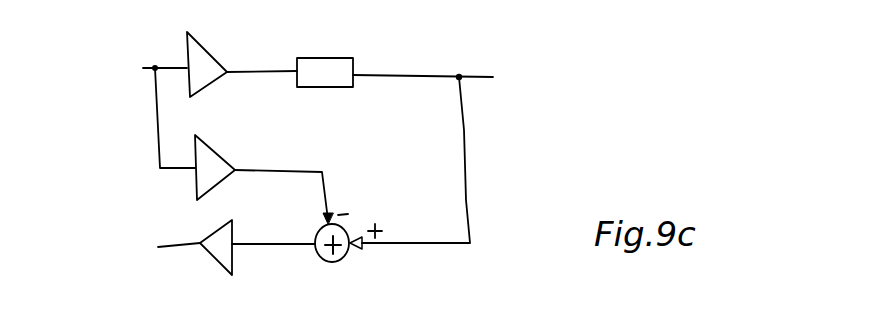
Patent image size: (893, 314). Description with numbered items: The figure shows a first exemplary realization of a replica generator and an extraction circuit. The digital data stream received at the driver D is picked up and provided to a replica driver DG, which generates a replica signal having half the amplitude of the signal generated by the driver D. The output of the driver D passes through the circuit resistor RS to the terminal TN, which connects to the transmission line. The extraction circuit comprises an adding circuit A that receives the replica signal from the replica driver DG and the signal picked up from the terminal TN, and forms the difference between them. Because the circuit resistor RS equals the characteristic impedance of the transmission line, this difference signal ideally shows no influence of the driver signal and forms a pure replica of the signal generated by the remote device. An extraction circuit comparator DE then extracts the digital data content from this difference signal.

The driver D is at (207, 64).
The replica driver DG is at (215, 167).
The extraction circuit comparator DE is at (216, 247).
The circuit resistor RS is at (328, 60).
The terminal TN is at (477, 60).
The adding circuit A is at (331, 251).